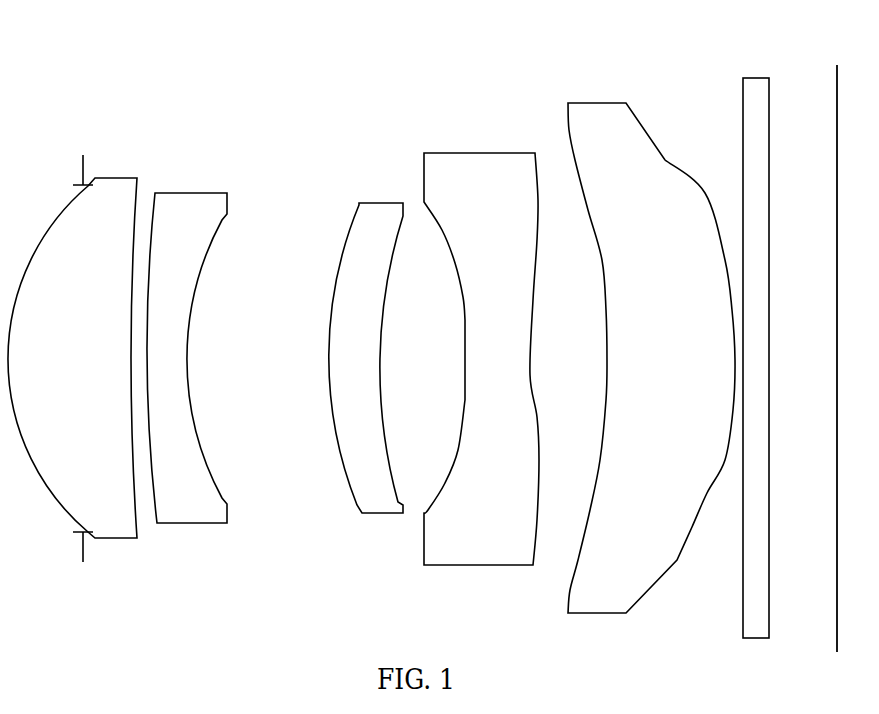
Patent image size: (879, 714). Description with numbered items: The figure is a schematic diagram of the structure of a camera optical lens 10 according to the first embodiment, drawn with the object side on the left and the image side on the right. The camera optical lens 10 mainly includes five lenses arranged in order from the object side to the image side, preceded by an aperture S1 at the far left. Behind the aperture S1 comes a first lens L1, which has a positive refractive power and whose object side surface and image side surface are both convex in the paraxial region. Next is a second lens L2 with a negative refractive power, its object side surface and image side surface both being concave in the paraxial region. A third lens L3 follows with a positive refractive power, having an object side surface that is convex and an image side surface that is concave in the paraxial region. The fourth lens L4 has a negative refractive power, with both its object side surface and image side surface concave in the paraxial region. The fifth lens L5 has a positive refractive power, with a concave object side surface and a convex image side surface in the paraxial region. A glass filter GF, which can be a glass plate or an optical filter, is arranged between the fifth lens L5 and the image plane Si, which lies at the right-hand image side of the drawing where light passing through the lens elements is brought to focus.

The camera optical lens 10 is at (436, 62).
The aperture S1 is at (83, 348).
The first lens L1 is at (72, 347).
The second lens L2 is at (187, 347).
The third lens L3 is at (366, 346).
The fourth lens L4 is at (481, 347).
The fifth lens L5 is at (651, 346).
The glass filter GF is at (754, 345).
The image plane Si is at (830, 347).